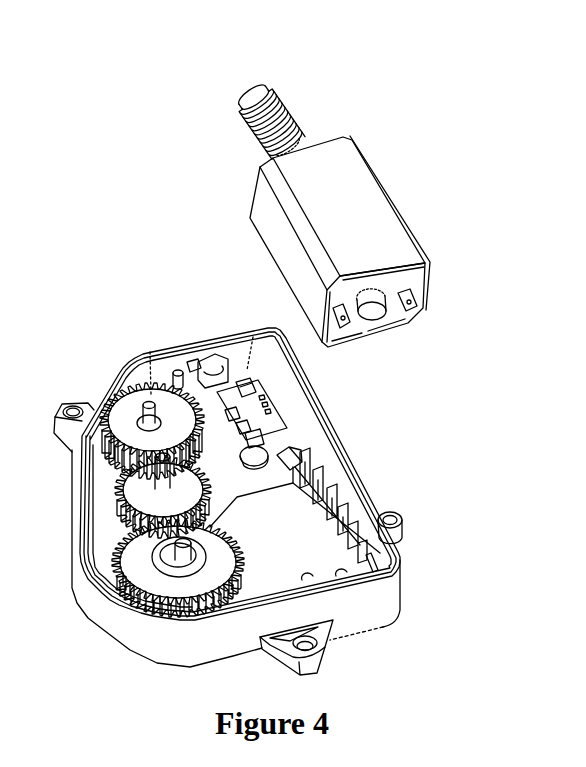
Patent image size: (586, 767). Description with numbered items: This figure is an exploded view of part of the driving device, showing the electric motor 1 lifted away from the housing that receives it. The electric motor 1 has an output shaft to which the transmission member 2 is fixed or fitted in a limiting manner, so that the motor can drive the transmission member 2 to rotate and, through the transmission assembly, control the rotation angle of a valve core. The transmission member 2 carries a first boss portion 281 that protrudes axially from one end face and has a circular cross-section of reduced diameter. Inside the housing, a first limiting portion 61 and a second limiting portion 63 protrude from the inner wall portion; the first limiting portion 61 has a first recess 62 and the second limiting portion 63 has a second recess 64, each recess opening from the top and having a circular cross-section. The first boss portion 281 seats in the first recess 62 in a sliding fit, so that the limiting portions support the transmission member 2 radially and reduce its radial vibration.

The electric motor 1 is at (373, 237).
The transmission member 2 is at (285, 117).
The first boss portion 281 is at (265, 82).
The first limiting portion 61 is at (187, 363).
The first recess 62 is at (207, 368).
The second limiting portion 63 is at (265, 427).
The second recess 64 is at (250, 440).